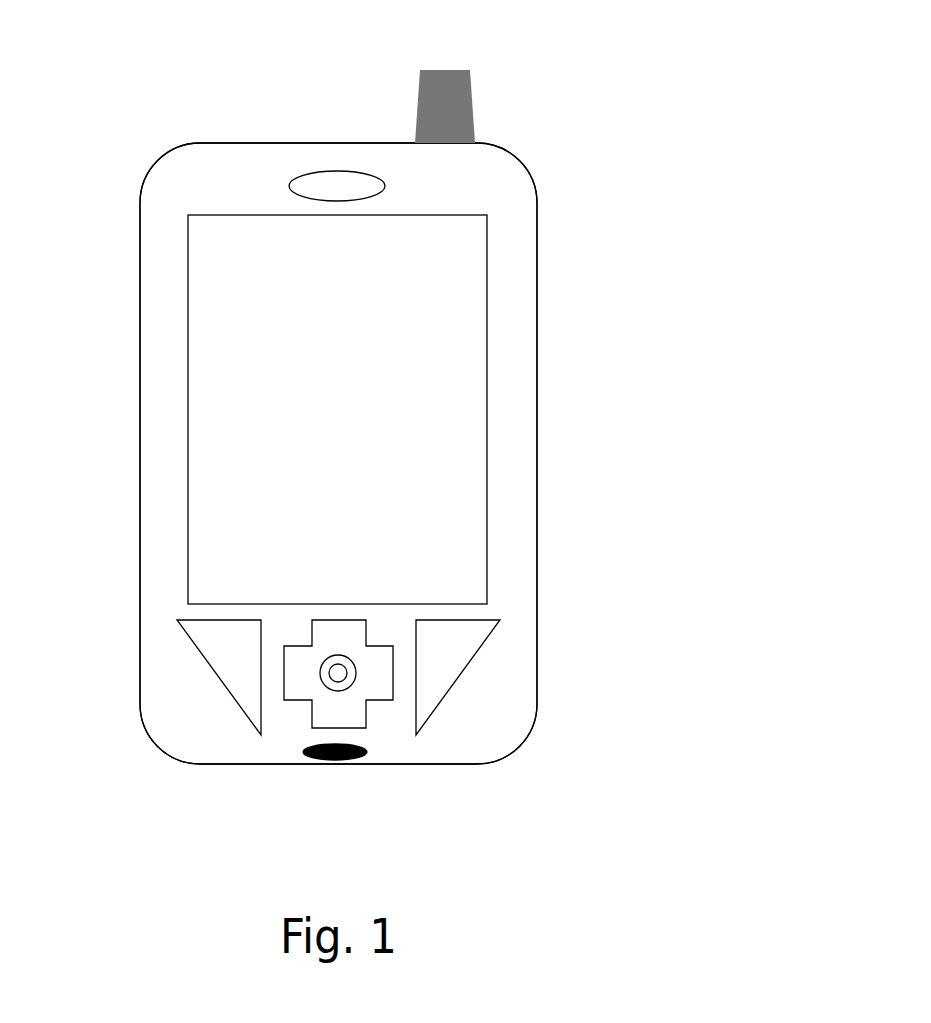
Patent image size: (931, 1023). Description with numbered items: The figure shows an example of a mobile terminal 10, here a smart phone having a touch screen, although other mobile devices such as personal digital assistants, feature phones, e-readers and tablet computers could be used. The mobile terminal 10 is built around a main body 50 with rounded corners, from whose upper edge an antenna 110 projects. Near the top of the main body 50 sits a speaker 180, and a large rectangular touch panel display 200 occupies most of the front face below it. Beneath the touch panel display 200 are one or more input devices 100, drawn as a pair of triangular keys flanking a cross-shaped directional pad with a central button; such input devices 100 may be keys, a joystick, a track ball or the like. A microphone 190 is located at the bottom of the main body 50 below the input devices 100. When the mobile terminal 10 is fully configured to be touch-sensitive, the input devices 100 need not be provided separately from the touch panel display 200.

The mobile terminal 10 is at (175, 133).
The main body 50 is at (520, 308).
The antenna 110 is at (472, 95).
The speaker 180 is at (312, 167).
The touch panel display 200 is at (232, 380).
The input devices 100 is at (225, 738).
The microphone 190 is at (367, 753).